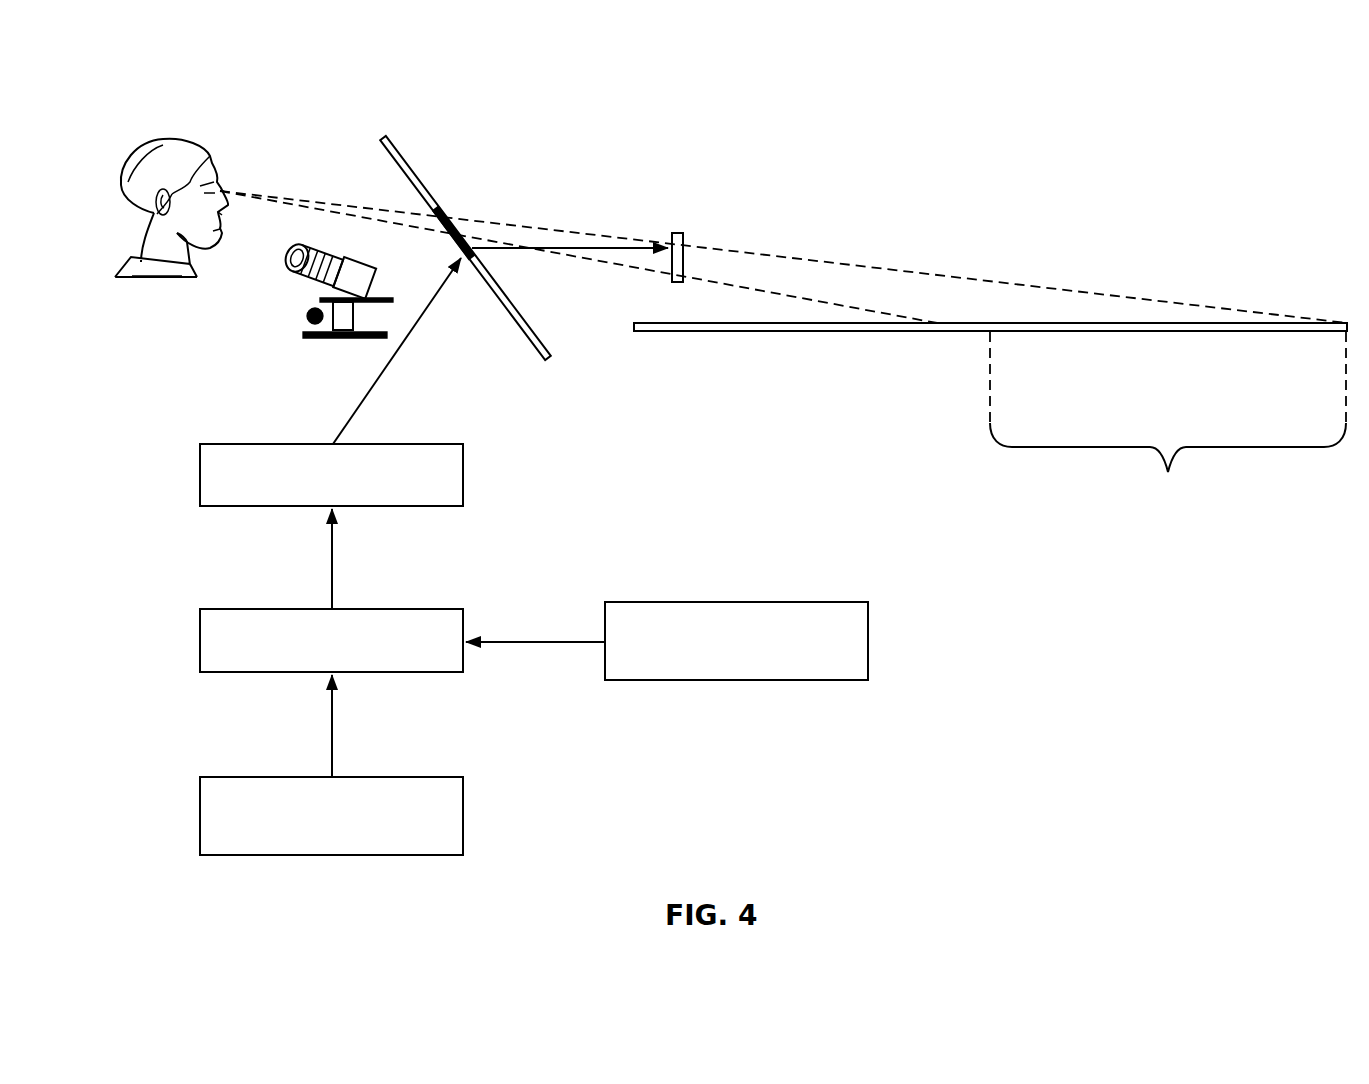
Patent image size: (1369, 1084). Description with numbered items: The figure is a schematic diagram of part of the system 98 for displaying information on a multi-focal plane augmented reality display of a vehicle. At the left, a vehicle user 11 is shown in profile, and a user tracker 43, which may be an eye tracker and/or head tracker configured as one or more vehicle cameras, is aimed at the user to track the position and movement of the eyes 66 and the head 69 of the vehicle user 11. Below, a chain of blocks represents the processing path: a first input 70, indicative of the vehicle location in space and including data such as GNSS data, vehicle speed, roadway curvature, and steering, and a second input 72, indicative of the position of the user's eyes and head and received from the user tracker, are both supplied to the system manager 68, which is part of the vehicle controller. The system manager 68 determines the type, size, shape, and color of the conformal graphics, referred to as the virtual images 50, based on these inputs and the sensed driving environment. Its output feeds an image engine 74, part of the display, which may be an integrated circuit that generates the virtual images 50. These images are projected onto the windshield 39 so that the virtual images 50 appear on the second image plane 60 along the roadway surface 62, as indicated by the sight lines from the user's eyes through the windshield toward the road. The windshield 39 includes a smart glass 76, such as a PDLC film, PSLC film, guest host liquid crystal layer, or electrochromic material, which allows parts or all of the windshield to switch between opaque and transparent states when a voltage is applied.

The vehicle user 11 is at (120, 194).
The head 69 is at (170, 132).
The eyes 66 is at (221, 230).
The user tracker 43 is at (300, 336).
The windshield 39 is at (398, 145).
The smart glass 76 is at (443, 216).
The virtual images 50 is at (676, 232).
The roadway surface 62 is at (845, 332).
The second image plane 60 is at (1168, 420).
The system 98 is at (1072, 130).
The image engine 74 is at (463, 475).
The system manager 68 is at (463, 628).
The first input 70 is at (463, 815).
The second input 72 is at (868, 642).